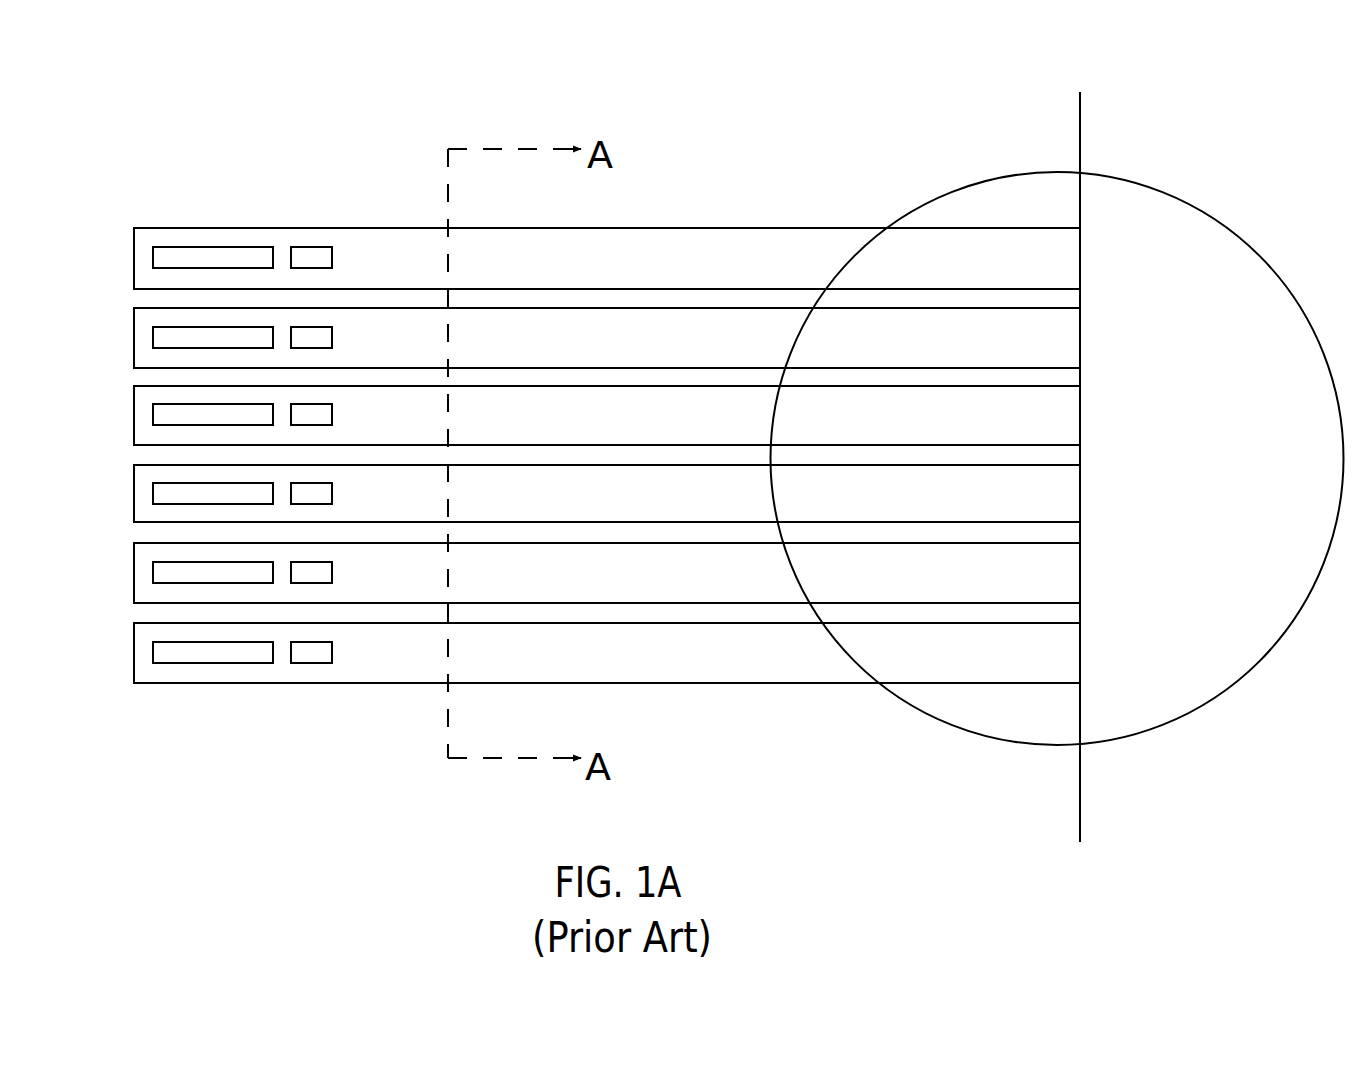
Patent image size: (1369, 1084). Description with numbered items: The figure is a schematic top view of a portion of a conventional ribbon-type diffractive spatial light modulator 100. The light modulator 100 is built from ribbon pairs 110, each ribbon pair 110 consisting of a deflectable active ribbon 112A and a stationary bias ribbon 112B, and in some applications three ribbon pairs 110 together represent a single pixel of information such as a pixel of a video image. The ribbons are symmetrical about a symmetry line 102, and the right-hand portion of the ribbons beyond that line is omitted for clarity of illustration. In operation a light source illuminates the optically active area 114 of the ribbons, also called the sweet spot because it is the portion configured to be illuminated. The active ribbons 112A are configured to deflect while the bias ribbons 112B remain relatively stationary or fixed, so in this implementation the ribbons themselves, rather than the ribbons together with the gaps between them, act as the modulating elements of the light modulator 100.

The ribbon-type diffractive spatial light modulator 100 is at (268, 156).
The symmetry line 102 is at (1079, 130).
The ribbon pair 110 is at (125, 228).
The active ribbon 112A is at (607, 415).
The bias ribbon 112B is at (607, 495).
The optically active area 114 is at (952, 190).